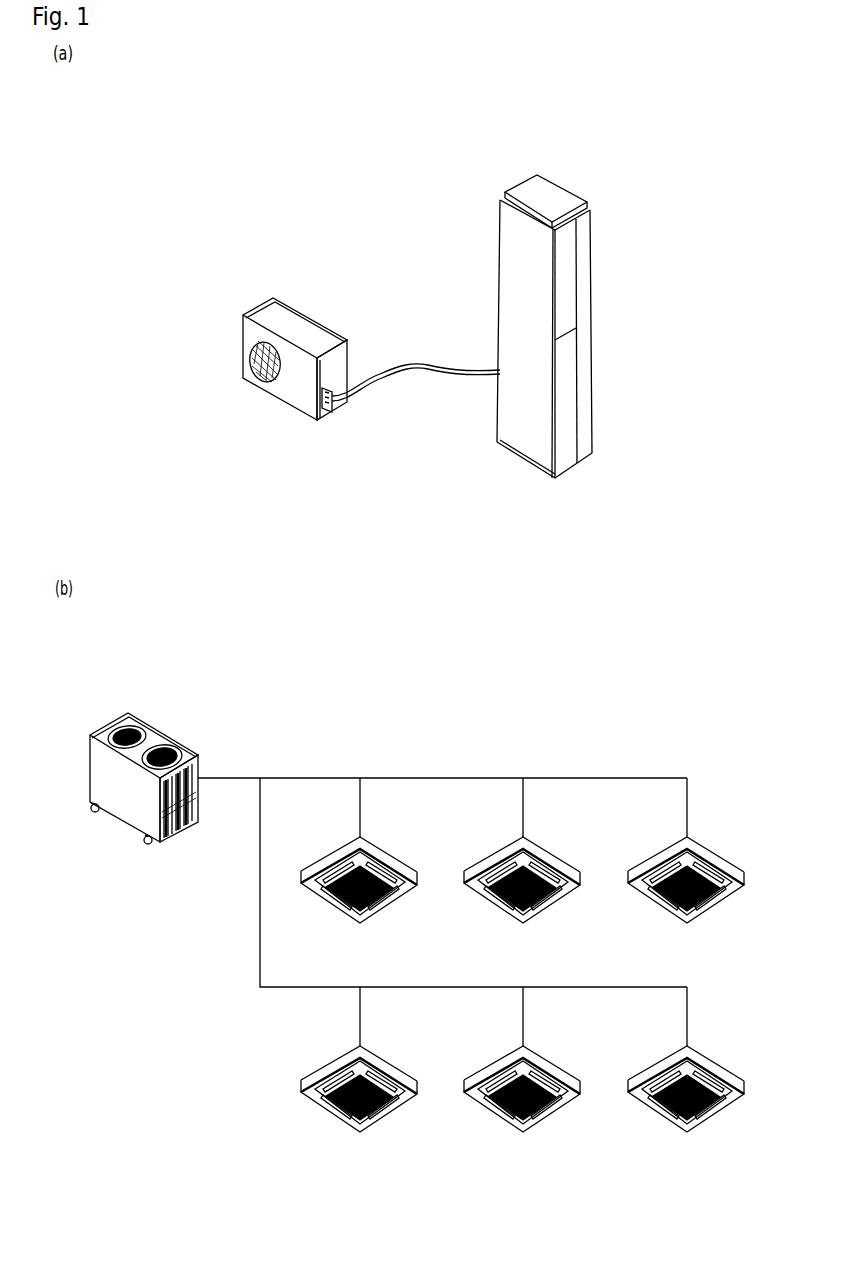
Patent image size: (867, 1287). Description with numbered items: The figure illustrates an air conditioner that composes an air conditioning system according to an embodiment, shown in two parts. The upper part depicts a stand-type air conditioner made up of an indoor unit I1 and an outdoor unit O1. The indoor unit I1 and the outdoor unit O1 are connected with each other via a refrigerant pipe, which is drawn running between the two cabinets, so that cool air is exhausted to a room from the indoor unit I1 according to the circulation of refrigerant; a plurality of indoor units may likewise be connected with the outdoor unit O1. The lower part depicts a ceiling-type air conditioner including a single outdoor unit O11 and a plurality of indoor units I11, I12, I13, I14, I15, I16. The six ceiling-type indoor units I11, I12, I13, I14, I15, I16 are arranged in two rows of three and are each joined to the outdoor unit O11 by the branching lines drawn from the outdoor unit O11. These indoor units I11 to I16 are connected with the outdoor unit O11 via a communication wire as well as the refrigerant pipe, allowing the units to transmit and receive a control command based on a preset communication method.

The outdoor unit O1 is at (302, 330).
The indoor unit I1 is at (550, 195).
The outdoor unit O11 is at (160, 732).
The indoor unit I11 is at (388, 852).
The indoor unit I12 is at (551, 852).
The indoor unit I13 is at (714, 852).
The indoor unit I14 is at (388, 1062).
The indoor unit I15 is at (551, 1062).
The indoor unit I16 is at (714, 1062).